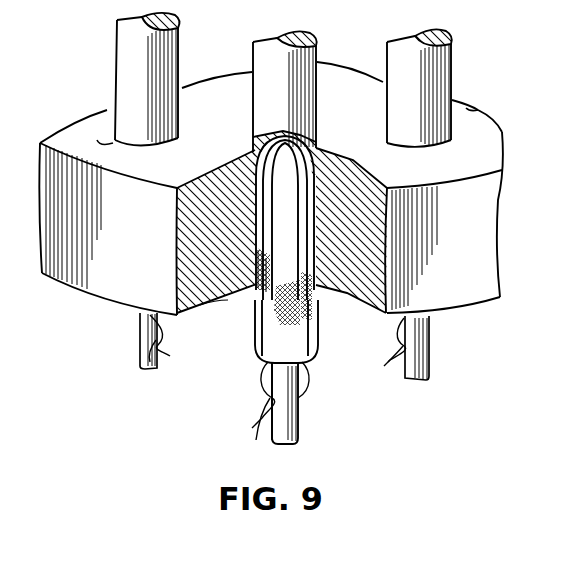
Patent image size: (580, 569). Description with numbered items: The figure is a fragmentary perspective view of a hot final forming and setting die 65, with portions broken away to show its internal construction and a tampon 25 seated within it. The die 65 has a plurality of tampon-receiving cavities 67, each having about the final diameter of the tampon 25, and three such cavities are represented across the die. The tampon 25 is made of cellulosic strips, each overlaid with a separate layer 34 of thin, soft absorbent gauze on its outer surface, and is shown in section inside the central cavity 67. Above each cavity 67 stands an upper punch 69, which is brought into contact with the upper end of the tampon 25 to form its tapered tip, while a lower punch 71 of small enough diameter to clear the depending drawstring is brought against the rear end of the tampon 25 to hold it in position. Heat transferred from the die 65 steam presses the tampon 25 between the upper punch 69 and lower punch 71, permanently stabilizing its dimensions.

The final forming and setting die 65 is at (213, 158).
The upper punch 69 is at (127, 48).
The tampon-receiving cavity 67 is at (97, 140).
The tampon 25 is at (262, 305).
The layer of gauze 34 is at (228, 302).
The lower punch 71 is at (138, 331).